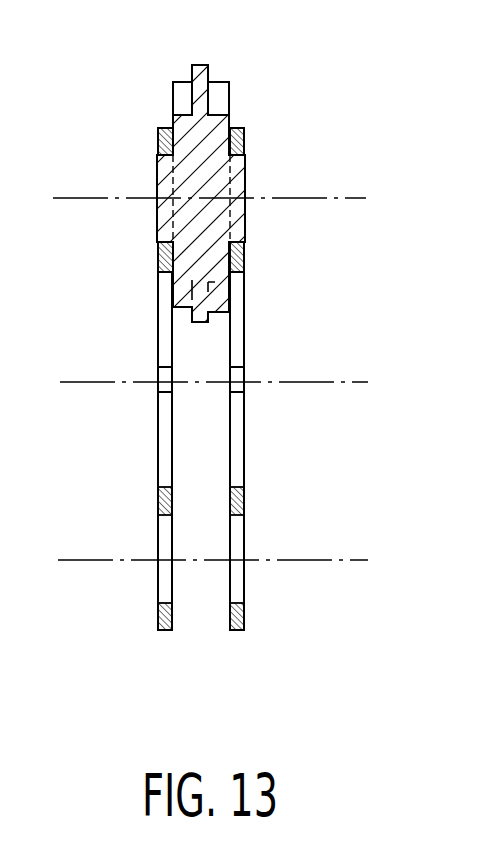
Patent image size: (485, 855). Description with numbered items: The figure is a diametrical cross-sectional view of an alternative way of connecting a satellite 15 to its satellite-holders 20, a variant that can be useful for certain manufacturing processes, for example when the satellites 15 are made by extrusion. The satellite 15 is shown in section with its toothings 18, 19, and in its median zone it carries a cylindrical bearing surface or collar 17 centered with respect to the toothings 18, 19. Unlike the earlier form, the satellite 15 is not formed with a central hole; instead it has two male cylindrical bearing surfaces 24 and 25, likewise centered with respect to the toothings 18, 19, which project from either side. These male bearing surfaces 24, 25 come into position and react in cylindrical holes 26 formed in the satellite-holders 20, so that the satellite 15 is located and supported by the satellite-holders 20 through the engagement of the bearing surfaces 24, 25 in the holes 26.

The satellite 15 is at (202, 217).
The cylindrical bearing surface or collar 17 is at (208, 82).
The toothing 18 is at (227, 98).
The toothing 19 is at (173, 95).
The satellite-holder 20 is at (244, 497).
The male cylindrical bearing surface 24 is at (240, 176).
The male cylindrical bearing surface 25 is at (158, 175).
The cylindrical hole 26 is at (243, 577).